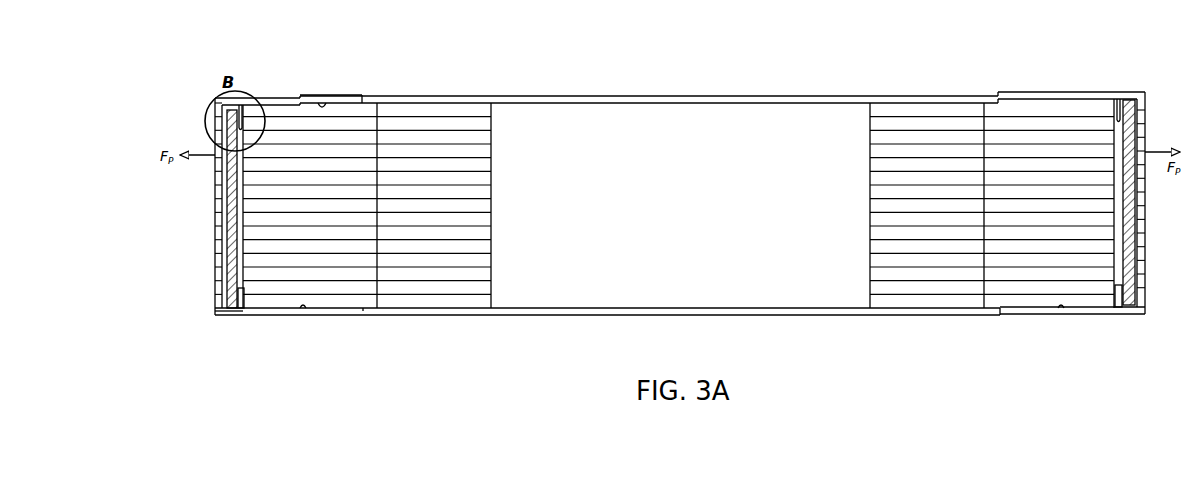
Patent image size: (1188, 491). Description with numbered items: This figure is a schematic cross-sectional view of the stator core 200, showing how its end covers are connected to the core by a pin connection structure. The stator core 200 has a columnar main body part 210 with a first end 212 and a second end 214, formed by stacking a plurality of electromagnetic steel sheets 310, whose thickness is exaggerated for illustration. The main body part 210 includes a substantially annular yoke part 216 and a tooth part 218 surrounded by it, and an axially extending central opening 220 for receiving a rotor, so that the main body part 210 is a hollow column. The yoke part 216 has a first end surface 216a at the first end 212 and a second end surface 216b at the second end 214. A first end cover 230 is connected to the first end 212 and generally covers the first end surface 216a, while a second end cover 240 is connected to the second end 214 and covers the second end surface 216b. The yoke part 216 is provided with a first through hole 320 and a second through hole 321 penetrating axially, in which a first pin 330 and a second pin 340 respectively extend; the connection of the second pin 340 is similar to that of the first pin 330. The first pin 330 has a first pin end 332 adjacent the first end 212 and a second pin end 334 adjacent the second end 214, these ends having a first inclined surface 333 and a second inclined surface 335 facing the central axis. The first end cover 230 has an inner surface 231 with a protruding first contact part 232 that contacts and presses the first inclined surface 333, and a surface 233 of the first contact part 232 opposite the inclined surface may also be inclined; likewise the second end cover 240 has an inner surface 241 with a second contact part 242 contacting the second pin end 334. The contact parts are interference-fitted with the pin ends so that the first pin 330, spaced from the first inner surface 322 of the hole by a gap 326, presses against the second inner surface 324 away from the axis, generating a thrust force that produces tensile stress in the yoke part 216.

The stator core 200 is at (679, 360).
The main body part 210 is at (874, 99).
The first end 212 is at (492, 105).
The second end 214 is at (493, 306).
The yoke part 216 is at (349, 116).
The first end surface 216a is at (300, 100).
The second end surface 216b is at (352, 311).
The tooth part 218 is at (482, 147).
The opening 220 is at (731, 214).
The first end cover 230 is at (247, 96).
The inner surface 231 is at (322, 103).
The first contact part 232 is at (238, 100).
The surface of first contact part 233 is at (258, 99).
The second end cover 240 is at (228, 316).
The inner surface 241 is at (303, 308).
The second contact part 242 is at (237, 312).
The electromagnetic steel sheets 310 is at (483, 167).
The first through hole 320 is at (241, 183).
The second through hole 321 is at (1118, 264).
The first inner surface 322 is at (243, 220).
The second inner surface 324 is at (232, 278).
The gap 326 is at (243, 248).
The first pin 330 is at (232, 193).
The first pin end 332 is at (233, 127).
The first inclined surface 333 is at (229, 116).
The second pin end 334 is at (226, 303).
The second inclined surface 335 is at (216, 311).
The second pin 340 is at (1137, 208).